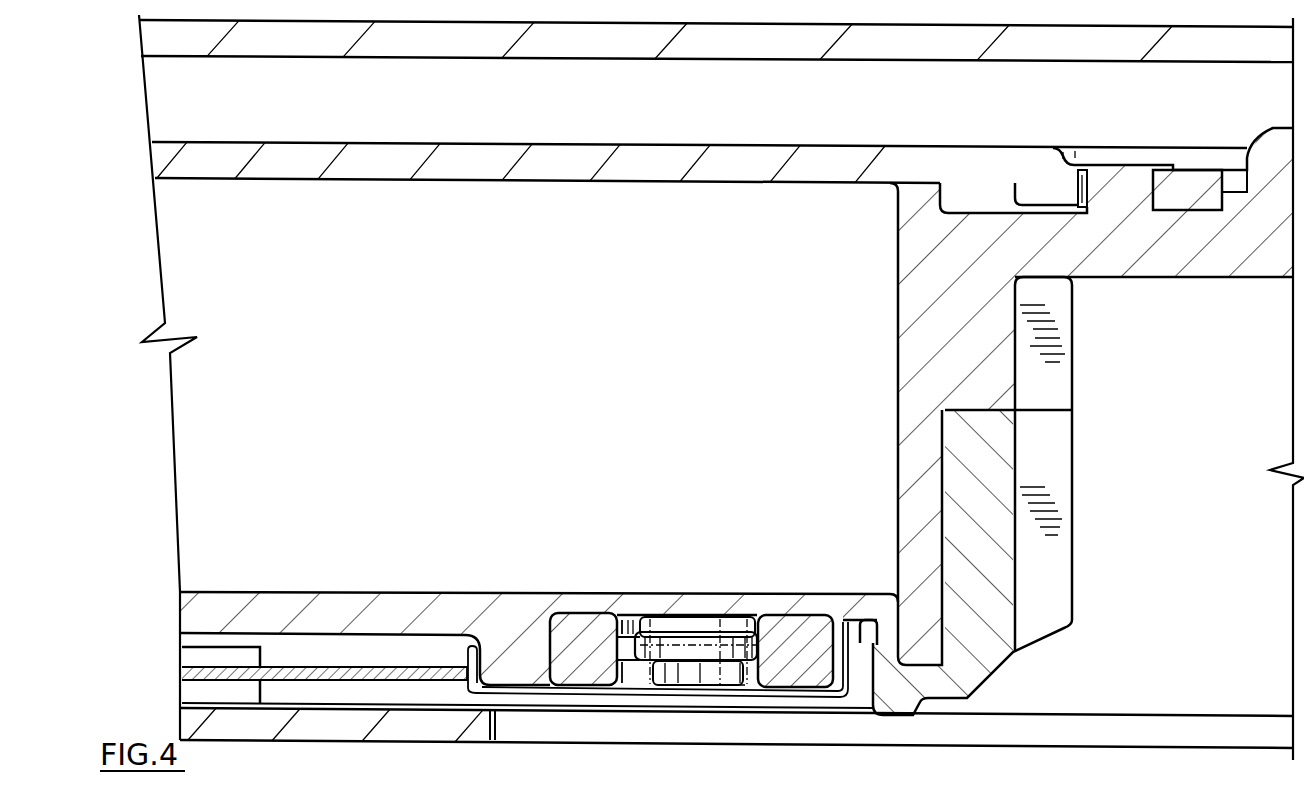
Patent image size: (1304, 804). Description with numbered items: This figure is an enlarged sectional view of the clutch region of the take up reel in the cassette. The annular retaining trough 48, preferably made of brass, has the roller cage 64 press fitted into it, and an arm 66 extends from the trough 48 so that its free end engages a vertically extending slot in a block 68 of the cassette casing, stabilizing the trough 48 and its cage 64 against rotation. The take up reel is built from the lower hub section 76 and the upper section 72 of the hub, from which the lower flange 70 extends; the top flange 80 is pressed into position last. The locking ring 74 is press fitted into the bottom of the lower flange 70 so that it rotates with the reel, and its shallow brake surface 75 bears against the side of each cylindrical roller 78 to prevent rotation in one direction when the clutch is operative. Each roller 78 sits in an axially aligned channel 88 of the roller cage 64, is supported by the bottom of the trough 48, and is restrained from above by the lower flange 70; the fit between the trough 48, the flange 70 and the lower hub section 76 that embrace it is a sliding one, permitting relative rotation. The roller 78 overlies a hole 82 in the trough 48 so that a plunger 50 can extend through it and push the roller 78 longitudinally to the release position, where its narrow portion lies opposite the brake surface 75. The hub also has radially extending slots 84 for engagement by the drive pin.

The retaining trough 48 is at (513, 693).
The plunger 50 is at (685, 725).
The roller cage 64 is at (803, 668).
The arm 66 is at (347, 665).
The block 68 is at (210, 660).
The lower flange 70 is at (523, 592).
The upper section of the hub 72 is at (900, 350).
The locking ring 74 is at (612, 613).
The brake surface 75 is at (665, 614).
The lower hub section 76 is at (992, 652).
The roller 78 is at (680, 661).
The top flange 80 is at (586, 172).
The hole 82 is at (702, 663).
The radially extending slot 84 is at (1060, 390).
The channel 88 is at (871, 617).